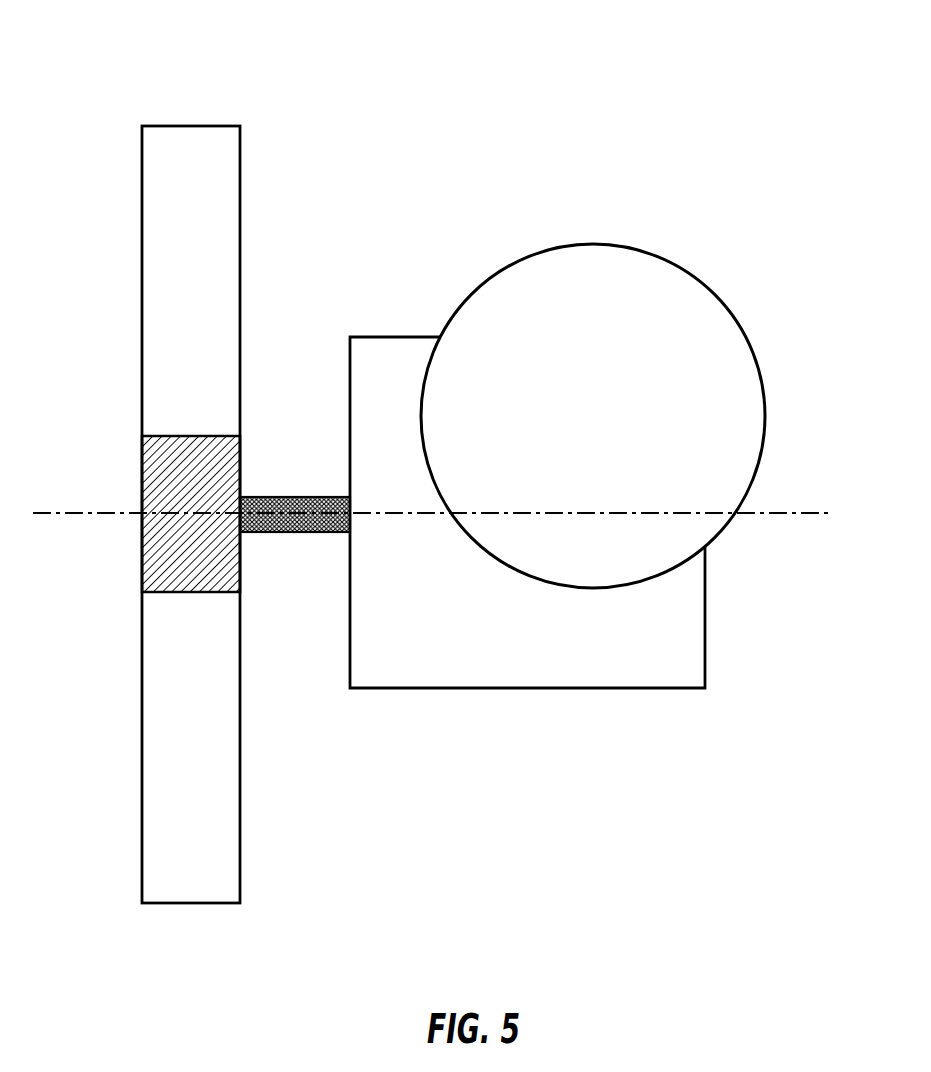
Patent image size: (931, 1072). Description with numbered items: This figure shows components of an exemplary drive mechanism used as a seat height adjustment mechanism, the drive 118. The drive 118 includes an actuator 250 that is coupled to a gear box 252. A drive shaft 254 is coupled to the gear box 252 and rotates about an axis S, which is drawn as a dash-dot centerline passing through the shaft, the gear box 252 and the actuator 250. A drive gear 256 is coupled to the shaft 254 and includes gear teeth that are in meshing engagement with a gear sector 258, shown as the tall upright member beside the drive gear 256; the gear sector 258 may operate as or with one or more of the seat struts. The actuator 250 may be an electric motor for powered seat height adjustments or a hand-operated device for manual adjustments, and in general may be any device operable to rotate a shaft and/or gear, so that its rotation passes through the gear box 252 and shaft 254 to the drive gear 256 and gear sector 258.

The drive 118 is at (472, 76).
The actuator 250 is at (675, 292).
The gear box 252 is at (695, 643).
The drive shaft 254 is at (260, 533).
The drive gear 256 is at (141, 545).
The gear sector 258 is at (153, 174).
The axis S is at (88, 513).